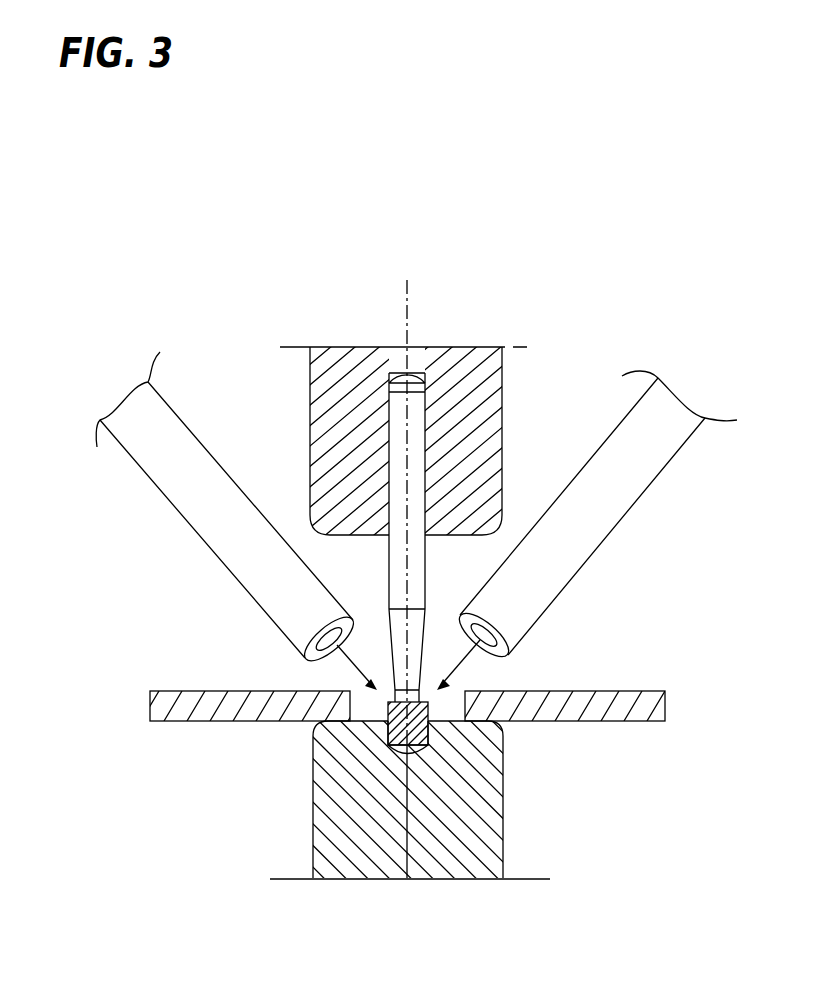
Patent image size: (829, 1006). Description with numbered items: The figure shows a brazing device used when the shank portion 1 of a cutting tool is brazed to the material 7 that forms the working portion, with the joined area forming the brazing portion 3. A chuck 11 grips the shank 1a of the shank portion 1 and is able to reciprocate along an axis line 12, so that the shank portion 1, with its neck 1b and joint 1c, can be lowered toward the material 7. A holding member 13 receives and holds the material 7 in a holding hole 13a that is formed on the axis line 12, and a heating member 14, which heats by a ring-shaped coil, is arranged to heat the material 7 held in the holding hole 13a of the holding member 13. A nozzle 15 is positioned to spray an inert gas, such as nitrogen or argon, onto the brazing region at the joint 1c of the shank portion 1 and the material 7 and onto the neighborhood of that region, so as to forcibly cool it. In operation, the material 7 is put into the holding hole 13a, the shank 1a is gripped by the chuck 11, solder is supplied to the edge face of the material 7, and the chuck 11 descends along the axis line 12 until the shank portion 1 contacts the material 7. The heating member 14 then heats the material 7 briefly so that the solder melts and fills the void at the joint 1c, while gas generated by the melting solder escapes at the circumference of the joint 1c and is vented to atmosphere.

The shank portion 1 is at (407, 537).
The shank 1a is at (395, 427).
The neck 1b is at (398, 652).
The joint 1c is at (430, 692).
The brazing portion 3 is at (423, 724).
The material 7 is at (397, 735).
The chuck 11 is at (333, 360).
The axis line 12 is at (407, 300).
The holding member 13 is at (429, 770).
The holding hole 13a is at (418, 747).
The heating member 14 is at (623, 713).
The nozzle 15 is at (190, 488).